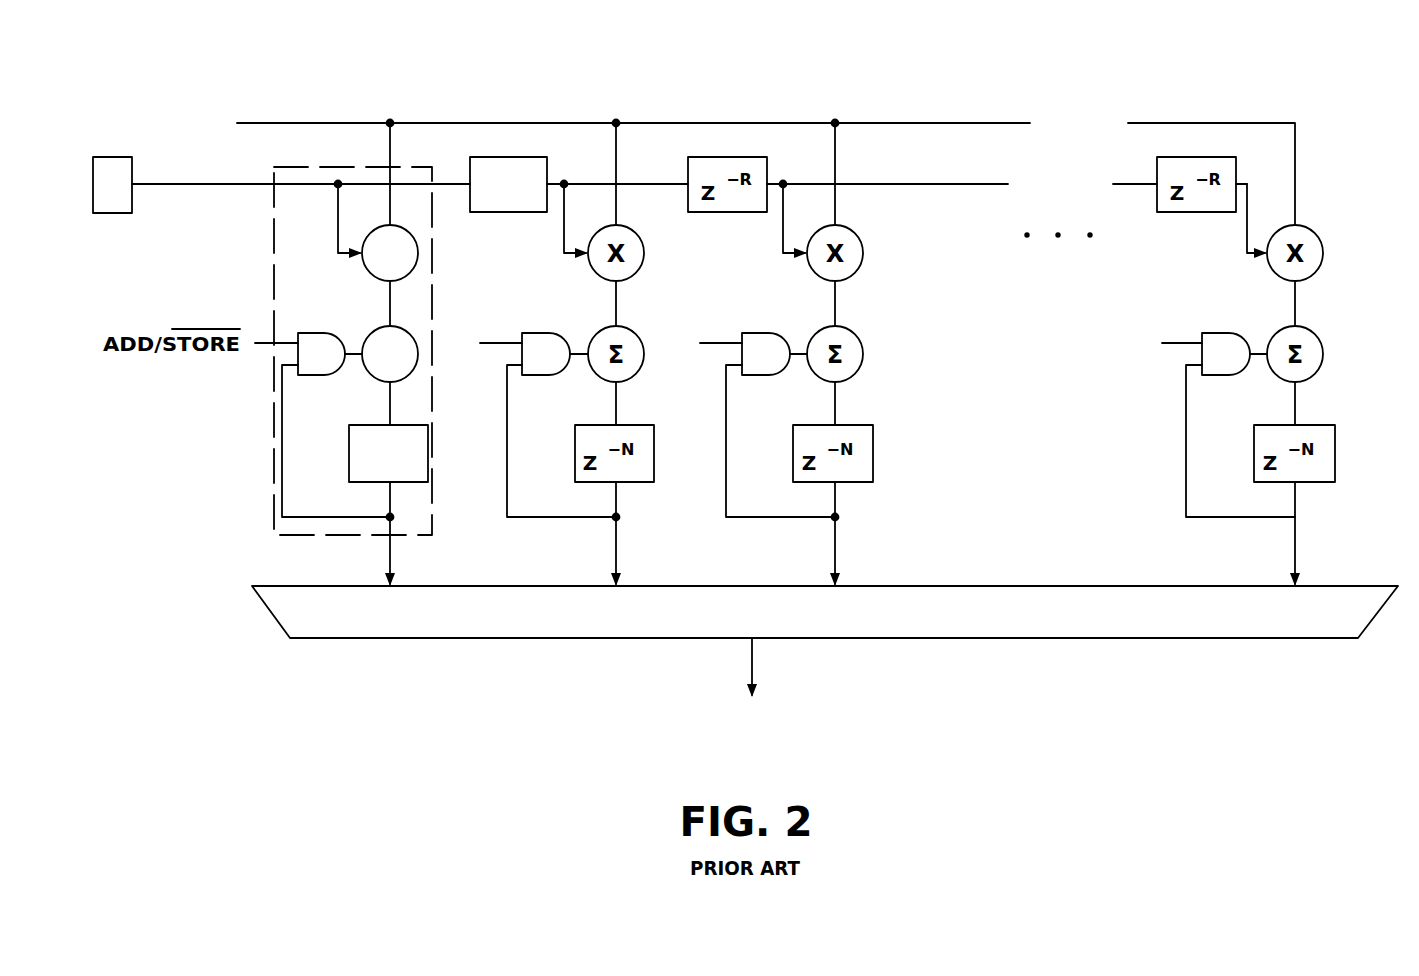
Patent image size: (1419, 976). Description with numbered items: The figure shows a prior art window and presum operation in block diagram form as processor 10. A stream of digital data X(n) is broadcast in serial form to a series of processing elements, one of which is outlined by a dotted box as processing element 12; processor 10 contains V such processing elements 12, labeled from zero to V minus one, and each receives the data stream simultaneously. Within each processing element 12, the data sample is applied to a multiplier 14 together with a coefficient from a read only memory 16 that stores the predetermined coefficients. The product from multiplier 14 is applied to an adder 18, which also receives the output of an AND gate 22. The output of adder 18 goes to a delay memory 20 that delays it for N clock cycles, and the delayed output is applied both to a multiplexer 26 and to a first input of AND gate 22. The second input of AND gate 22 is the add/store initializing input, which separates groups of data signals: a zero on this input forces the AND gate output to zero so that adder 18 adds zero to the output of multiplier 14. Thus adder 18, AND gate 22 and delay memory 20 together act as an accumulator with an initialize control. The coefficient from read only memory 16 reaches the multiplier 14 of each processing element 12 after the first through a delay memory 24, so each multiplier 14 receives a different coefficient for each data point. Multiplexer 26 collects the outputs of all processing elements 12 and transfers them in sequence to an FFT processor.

The processor 10 is at (737, 90).
The processing element 12 is at (274, 249).
The multiplier 14 is at (418, 258).
The read only memory 16 is at (106, 157).
The adder 18 is at (408, 334).
The delay memory 20 is at (349, 452).
The AND gates 22 is at (308, 333).
The delay memory 24 is at (528, 162).
The multiplexer 26 is at (347, 622).